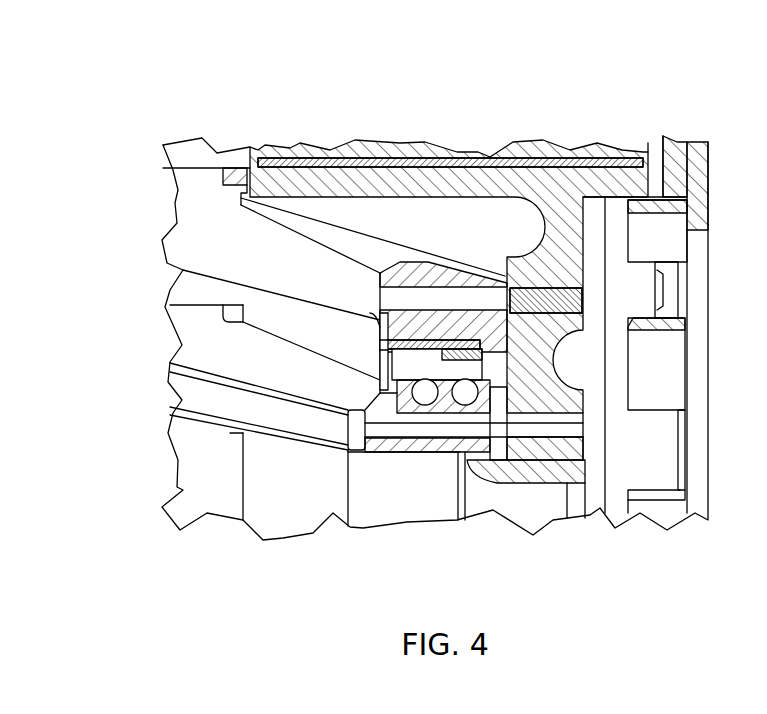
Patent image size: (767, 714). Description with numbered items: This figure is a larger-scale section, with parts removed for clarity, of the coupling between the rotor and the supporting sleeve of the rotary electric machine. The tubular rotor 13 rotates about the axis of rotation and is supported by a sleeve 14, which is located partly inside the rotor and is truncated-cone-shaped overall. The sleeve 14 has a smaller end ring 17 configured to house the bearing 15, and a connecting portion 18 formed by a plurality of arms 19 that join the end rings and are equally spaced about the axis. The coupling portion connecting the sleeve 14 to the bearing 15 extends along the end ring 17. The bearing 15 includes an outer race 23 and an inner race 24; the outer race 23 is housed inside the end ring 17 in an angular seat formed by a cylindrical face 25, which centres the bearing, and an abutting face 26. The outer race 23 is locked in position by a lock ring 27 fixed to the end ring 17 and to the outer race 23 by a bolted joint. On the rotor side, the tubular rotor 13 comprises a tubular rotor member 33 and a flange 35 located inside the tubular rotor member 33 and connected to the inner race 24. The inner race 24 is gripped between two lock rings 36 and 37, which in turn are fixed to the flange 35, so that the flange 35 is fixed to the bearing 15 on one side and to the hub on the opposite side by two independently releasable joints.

The tubular rotor 13 is at (644, 107).
The sleeve 14 is at (130, 354).
The bearing 15 is at (509, 380).
The end ring 17 is at (485, 315).
The connecting portion 18 is at (214, 443).
The arms 19 is at (232, 242).
The outer race 23 is at (430, 343).
The inner race 24 is at (440, 413).
The cylindrical face 25 is at (410, 360).
The abutting face 26 is at (400, 380).
The lock ring 27 is at (377, 343).
The tubular rotor member 33 is at (458, 183).
The flange 35 is at (567, 220).
The lock ring 36 is at (495, 450).
The lock ring 37 is at (402, 443).